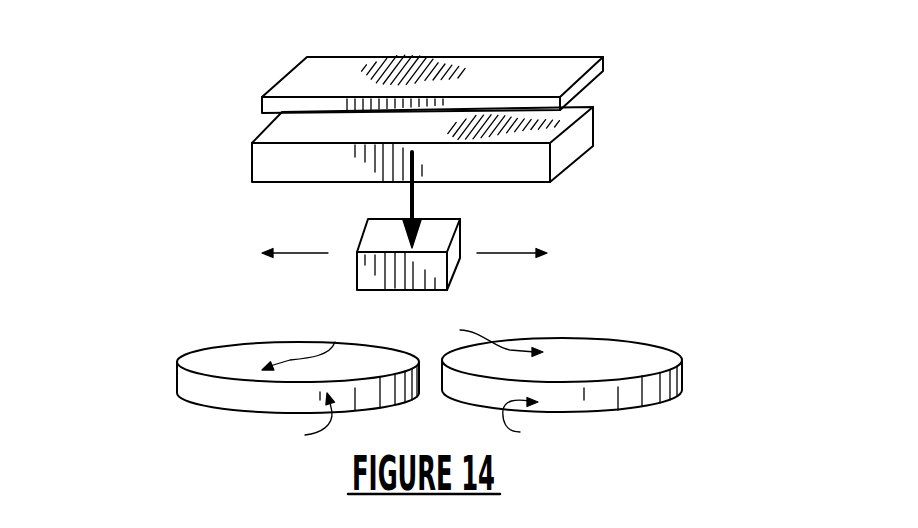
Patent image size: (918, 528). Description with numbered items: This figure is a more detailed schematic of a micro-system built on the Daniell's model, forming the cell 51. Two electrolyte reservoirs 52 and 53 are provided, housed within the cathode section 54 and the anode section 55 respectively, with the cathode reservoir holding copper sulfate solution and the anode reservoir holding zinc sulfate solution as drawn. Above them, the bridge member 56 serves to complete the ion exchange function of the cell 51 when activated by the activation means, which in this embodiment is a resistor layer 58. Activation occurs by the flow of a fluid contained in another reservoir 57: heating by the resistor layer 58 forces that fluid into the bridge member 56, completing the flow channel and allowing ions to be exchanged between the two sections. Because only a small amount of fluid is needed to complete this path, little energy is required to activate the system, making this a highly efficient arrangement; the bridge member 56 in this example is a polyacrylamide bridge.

The Daniell's model cell 51 is at (456, 93).
The electrolyte reservoir 52 is at (634, 360).
The electrolyte reservoir 53 is at (234, 358).
The cathode section 54 is at (692, 369).
The anode section 55 is at (175, 383).
The bridge member 56 is at (478, 237).
The reservoir 57 is at (580, 140).
The resistor layer 58 is at (279, 72).